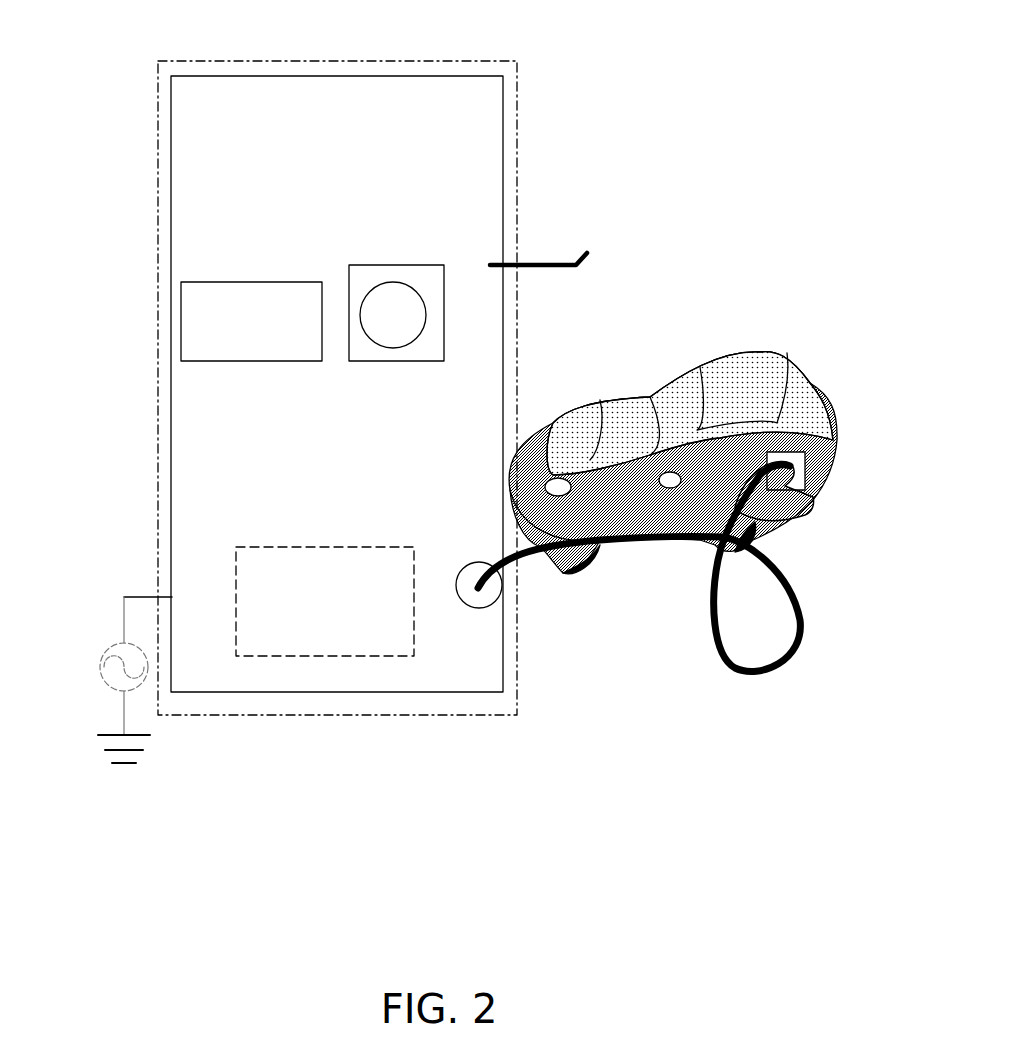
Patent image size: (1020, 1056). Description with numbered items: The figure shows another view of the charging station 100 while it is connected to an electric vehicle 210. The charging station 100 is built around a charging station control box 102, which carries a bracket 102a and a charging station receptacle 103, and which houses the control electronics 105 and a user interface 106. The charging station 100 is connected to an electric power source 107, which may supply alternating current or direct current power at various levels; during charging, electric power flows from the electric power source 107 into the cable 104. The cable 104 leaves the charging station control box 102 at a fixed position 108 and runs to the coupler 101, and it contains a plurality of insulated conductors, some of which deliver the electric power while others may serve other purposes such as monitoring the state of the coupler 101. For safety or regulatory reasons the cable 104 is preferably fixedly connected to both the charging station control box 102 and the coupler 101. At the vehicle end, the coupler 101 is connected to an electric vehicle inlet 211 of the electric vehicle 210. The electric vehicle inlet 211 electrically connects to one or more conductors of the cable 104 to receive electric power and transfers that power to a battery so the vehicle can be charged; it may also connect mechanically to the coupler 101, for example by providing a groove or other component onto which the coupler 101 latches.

The charging station 100 is at (158, 61).
The coupler 101 is at (812, 503).
The charging station control box 102 is at (321, 203).
The bracket 102a is at (533, 265).
The charging station receptacle 103 is at (408, 295).
The cable 104 is at (770, 675).
The control electronics 105 is at (310, 636).
The user interface 106 is at (236, 355).
The electric power source 107 is at (112, 646).
The fixed position 108 is at (488, 595).
The electric vehicle 210 is at (730, 368).
The electric vehicle inlet 211 is at (793, 455).